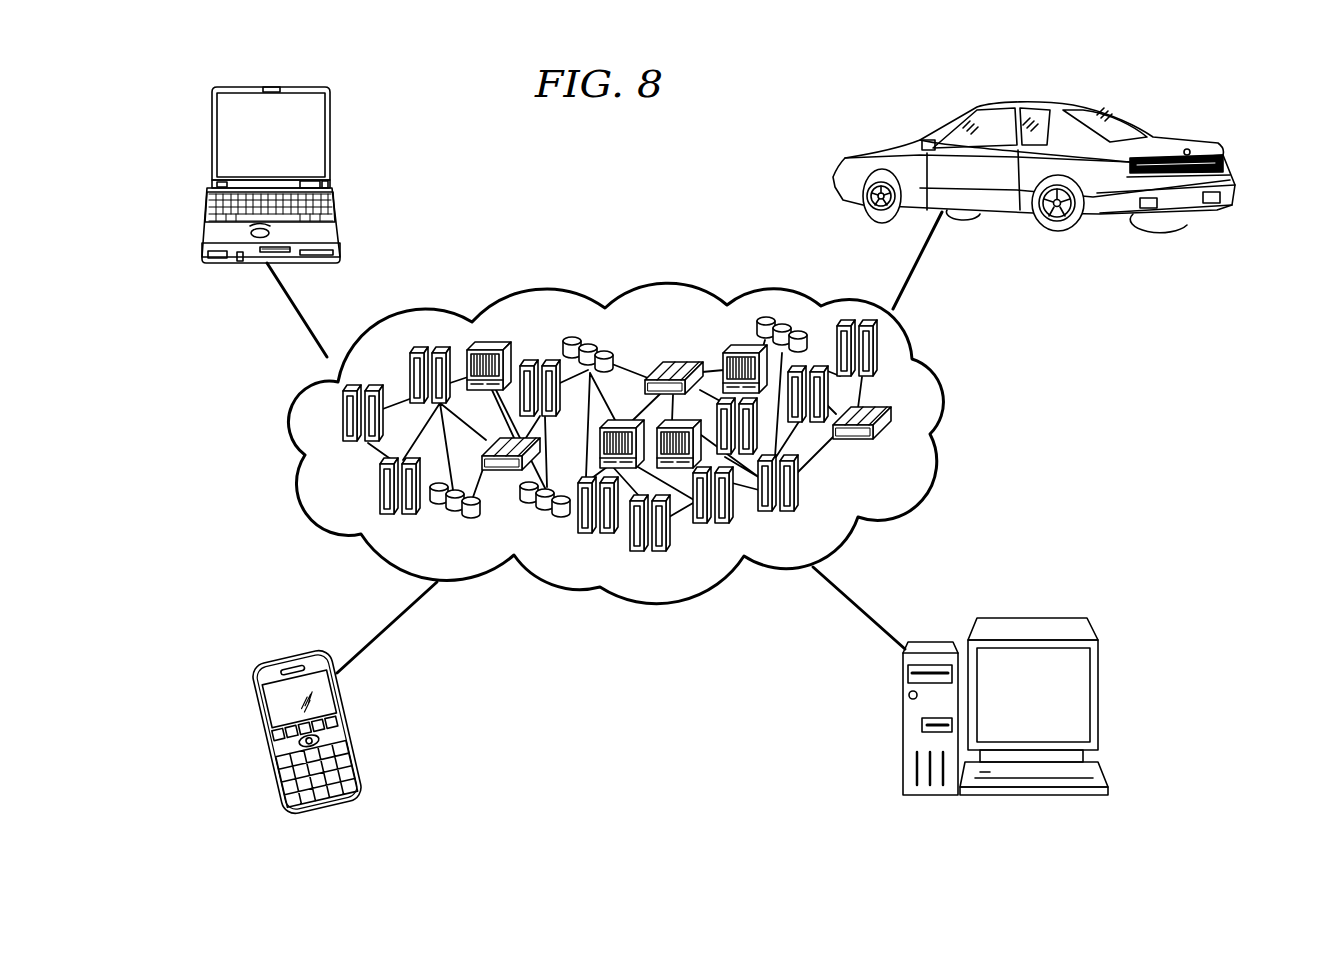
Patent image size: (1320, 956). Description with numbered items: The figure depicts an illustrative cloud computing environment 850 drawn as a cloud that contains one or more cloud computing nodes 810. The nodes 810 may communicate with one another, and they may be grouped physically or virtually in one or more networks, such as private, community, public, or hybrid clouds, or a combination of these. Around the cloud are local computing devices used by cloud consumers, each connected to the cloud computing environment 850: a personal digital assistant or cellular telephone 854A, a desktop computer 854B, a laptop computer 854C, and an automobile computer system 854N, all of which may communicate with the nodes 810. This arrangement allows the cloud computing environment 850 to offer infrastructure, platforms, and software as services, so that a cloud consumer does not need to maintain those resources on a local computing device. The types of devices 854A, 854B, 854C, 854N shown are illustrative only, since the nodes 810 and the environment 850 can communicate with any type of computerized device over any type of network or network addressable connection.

The cloud computing environment 850 is at (942, 366).
The cloud computing nodes 810 is at (897, 450).
The personal digital assistant (PDA) or cellular telephone 854A is at (257, 720).
The desktop computer 854B is at (1032, 618).
The laptop computer 854C is at (209, 128).
The automobile computer system 854N is at (1199, 141).